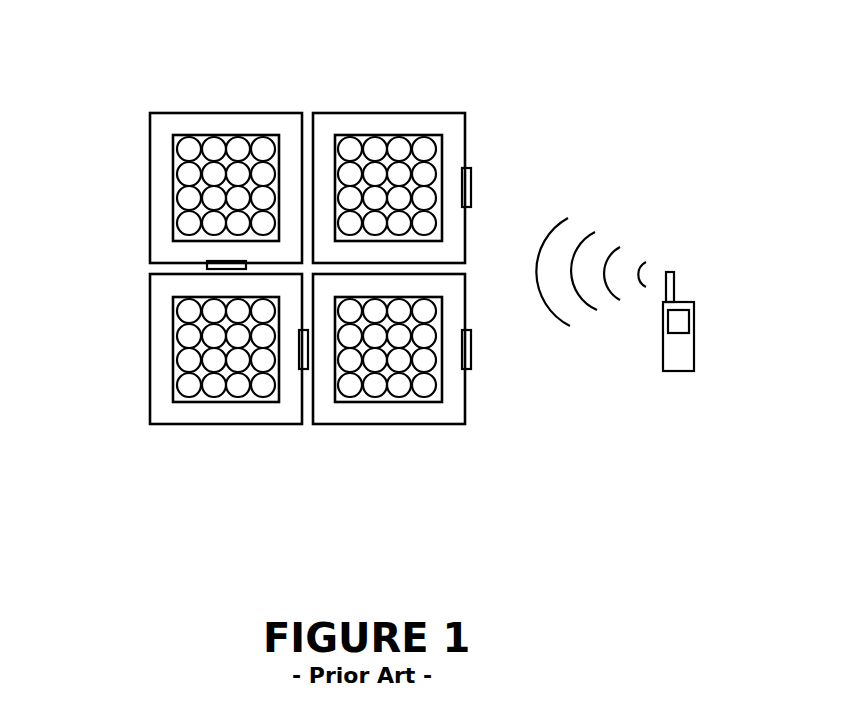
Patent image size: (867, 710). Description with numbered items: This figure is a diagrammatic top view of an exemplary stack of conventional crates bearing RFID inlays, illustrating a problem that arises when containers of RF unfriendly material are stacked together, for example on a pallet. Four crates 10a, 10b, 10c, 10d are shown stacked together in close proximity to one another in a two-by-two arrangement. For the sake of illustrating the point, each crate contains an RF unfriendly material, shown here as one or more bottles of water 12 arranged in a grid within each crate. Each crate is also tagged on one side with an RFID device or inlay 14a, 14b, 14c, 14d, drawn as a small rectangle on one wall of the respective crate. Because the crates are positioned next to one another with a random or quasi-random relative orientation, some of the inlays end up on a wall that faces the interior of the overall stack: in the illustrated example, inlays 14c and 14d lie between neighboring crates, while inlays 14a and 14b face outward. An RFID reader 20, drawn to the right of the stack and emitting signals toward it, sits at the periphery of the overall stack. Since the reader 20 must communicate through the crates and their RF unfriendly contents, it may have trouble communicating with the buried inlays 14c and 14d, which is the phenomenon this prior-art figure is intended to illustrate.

The crate 10a is at (421, 417).
The crate 10b is at (382, 125).
The crate 10c is at (207, 124).
The crate 10d is at (173, 414).
The bottles of water 12 is at (214, 175).
The RFID inlay 14a is at (467, 352).
The RFID inlay 14b is at (467, 187).
The RFID inlay 14c is at (223, 265).
The RFID inlay 14d is at (303, 355).
The RFID reader 20 is at (678, 357).